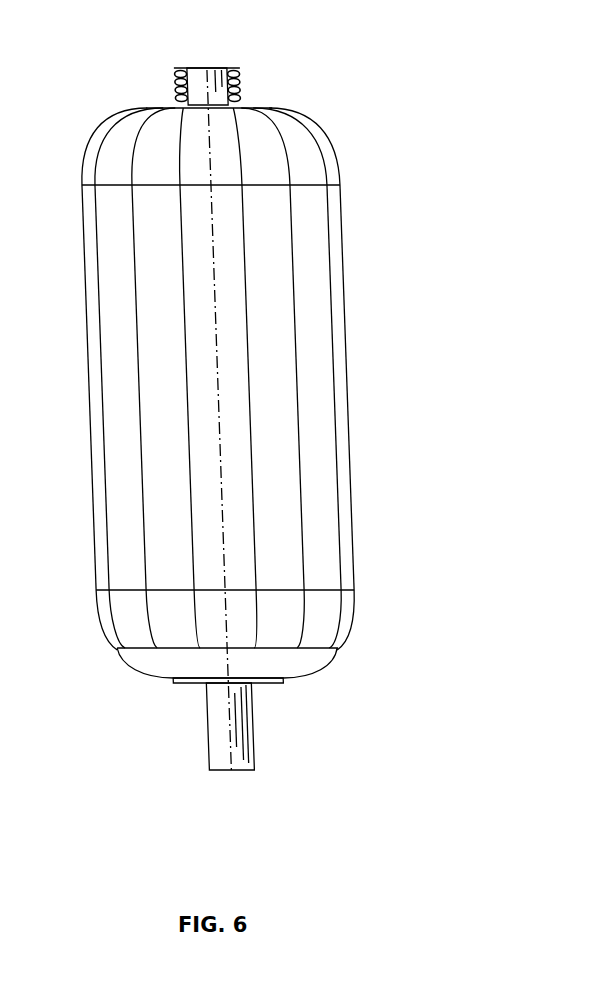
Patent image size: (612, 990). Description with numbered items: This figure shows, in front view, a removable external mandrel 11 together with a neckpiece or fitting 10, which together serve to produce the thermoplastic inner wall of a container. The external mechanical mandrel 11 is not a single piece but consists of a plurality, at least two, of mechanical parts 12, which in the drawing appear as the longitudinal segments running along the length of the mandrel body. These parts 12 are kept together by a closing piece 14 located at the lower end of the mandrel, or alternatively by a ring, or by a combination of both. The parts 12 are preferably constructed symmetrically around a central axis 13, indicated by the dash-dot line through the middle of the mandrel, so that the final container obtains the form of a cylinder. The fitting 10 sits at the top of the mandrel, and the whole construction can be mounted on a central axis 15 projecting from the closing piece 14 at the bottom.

The neckpiece or fitting 10 is at (257, 56).
The removable external mandrel 11 is at (129, 127).
The mechanical parts 12 is at (272, 378).
The central axis 13 is at (331, 420).
The closing piece 14 is at (275, 671).
The central axis 15 is at (167, 736).